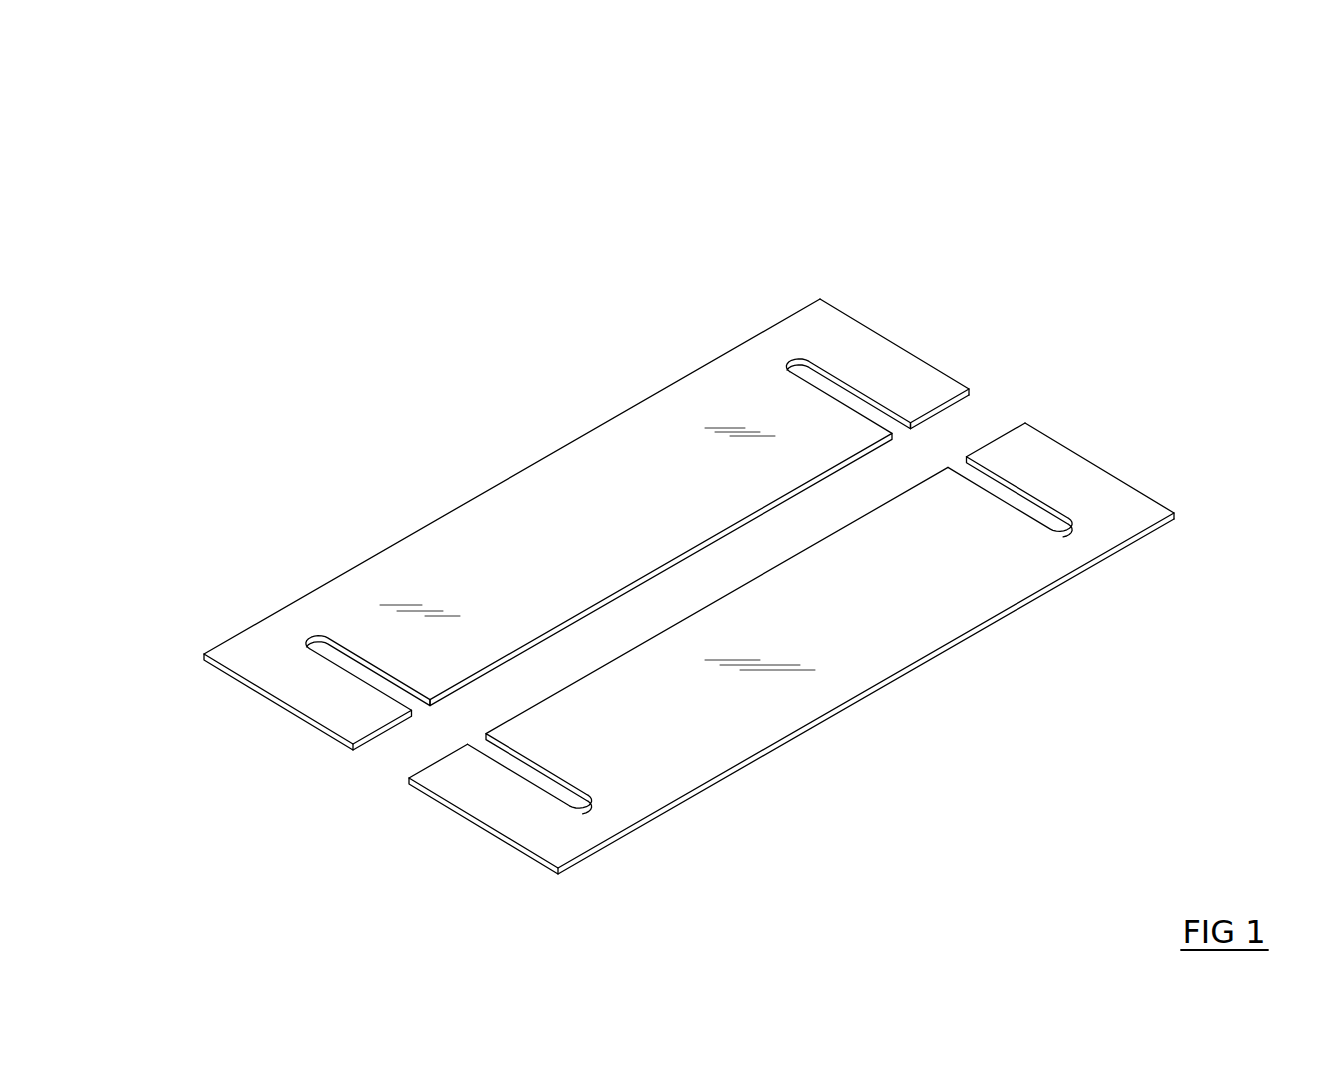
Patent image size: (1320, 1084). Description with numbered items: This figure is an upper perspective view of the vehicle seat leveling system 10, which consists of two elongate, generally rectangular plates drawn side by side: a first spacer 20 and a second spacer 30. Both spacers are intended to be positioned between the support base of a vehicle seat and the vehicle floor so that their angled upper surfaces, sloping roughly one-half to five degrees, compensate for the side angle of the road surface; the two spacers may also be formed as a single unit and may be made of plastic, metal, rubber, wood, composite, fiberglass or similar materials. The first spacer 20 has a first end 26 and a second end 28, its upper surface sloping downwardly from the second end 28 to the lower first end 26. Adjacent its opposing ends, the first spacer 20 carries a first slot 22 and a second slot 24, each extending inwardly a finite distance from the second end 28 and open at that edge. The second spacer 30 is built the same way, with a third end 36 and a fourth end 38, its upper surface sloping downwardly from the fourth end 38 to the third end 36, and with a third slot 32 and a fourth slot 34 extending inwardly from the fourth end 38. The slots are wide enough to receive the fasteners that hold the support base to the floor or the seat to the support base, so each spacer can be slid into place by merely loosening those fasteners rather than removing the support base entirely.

The vehicle seat leveling system 10 is at (1198, 170).
The first spacer 20 is at (1063, 582).
The first slot 22 is at (990, 470).
The second slot 24 is at (488, 757).
The first end 26 is at (935, 649).
The second end 28 is at (560, 688).
The second spacer 30 is at (722, 353).
The third slot 32 is at (822, 370).
The fourth slot 34 is at (337, 668).
The third end 36 is at (550, 633).
The fourth end 38 is at (595, 430).